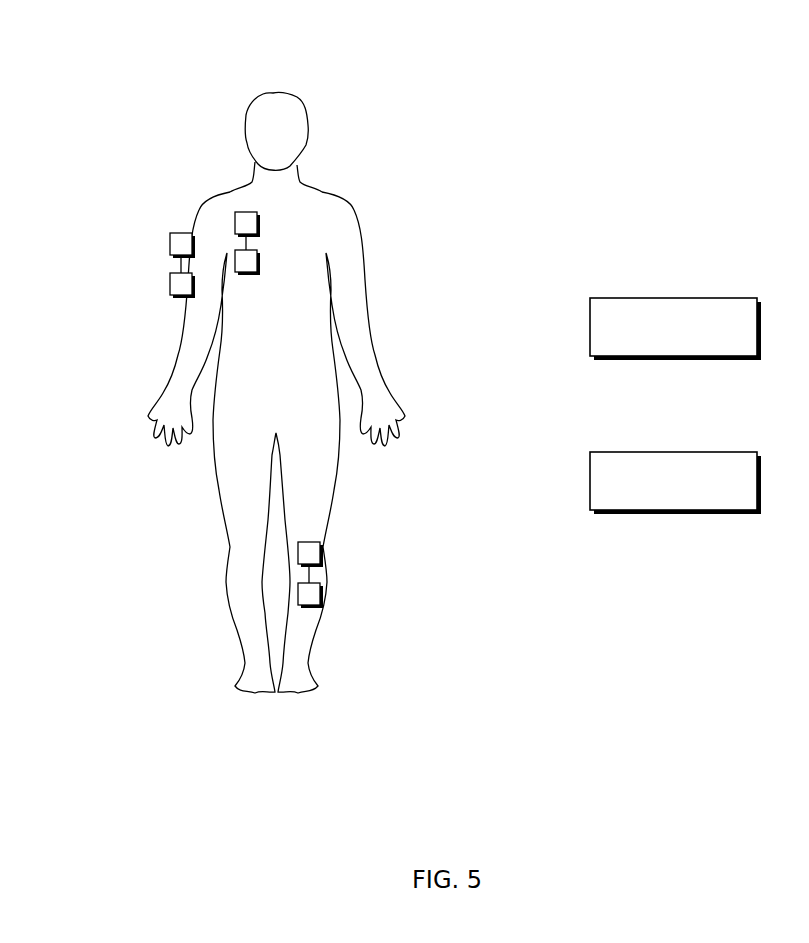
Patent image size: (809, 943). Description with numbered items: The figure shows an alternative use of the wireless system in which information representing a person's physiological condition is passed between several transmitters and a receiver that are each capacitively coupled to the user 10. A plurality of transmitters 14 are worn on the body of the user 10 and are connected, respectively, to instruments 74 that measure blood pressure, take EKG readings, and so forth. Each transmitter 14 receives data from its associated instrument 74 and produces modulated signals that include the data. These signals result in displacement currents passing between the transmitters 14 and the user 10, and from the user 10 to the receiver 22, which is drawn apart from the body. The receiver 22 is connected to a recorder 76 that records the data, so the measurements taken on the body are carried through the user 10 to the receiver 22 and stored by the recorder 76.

The user 10 is at (273, 92).
The transmitter 14 is at (245, 212).
The instrument 74 is at (257, 263).
The receiver 22 is at (705, 298).
The recorder 76 is at (702, 452).